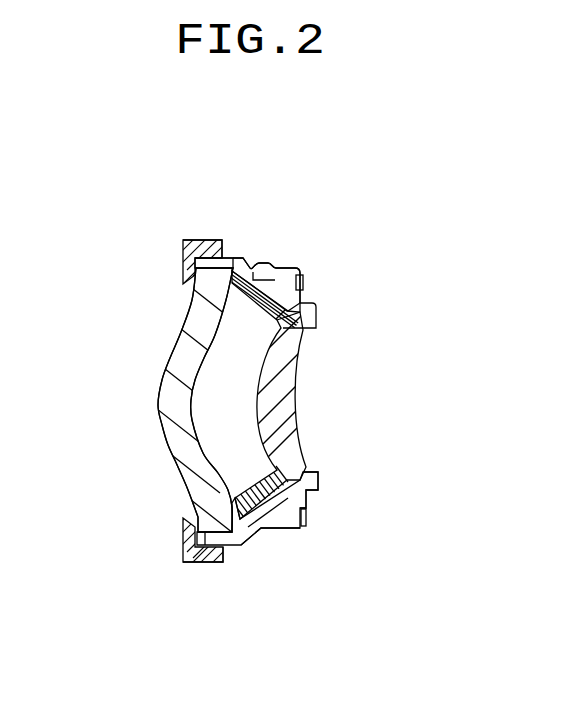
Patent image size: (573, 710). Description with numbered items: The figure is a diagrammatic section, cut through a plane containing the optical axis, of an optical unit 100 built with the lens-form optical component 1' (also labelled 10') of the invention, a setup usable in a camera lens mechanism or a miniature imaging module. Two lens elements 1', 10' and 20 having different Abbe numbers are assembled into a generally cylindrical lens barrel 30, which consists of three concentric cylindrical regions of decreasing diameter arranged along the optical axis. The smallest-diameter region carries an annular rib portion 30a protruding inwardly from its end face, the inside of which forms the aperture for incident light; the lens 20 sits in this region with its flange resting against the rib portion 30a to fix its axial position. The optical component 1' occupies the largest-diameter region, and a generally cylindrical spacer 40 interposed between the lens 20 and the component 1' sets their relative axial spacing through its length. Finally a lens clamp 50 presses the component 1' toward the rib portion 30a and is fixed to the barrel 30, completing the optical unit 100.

The optical unit 100 is at (281, 178).
The optical component 1' is at (163, 400).
The first lens 10' is at (195, 400).
The lens 20 is at (318, 316).
The lens barrel 30 is at (262, 264).
The rib portion 30a is at (318, 483).
The spacer 40 is at (283, 528).
The lens clamp 50 is at (202, 562).